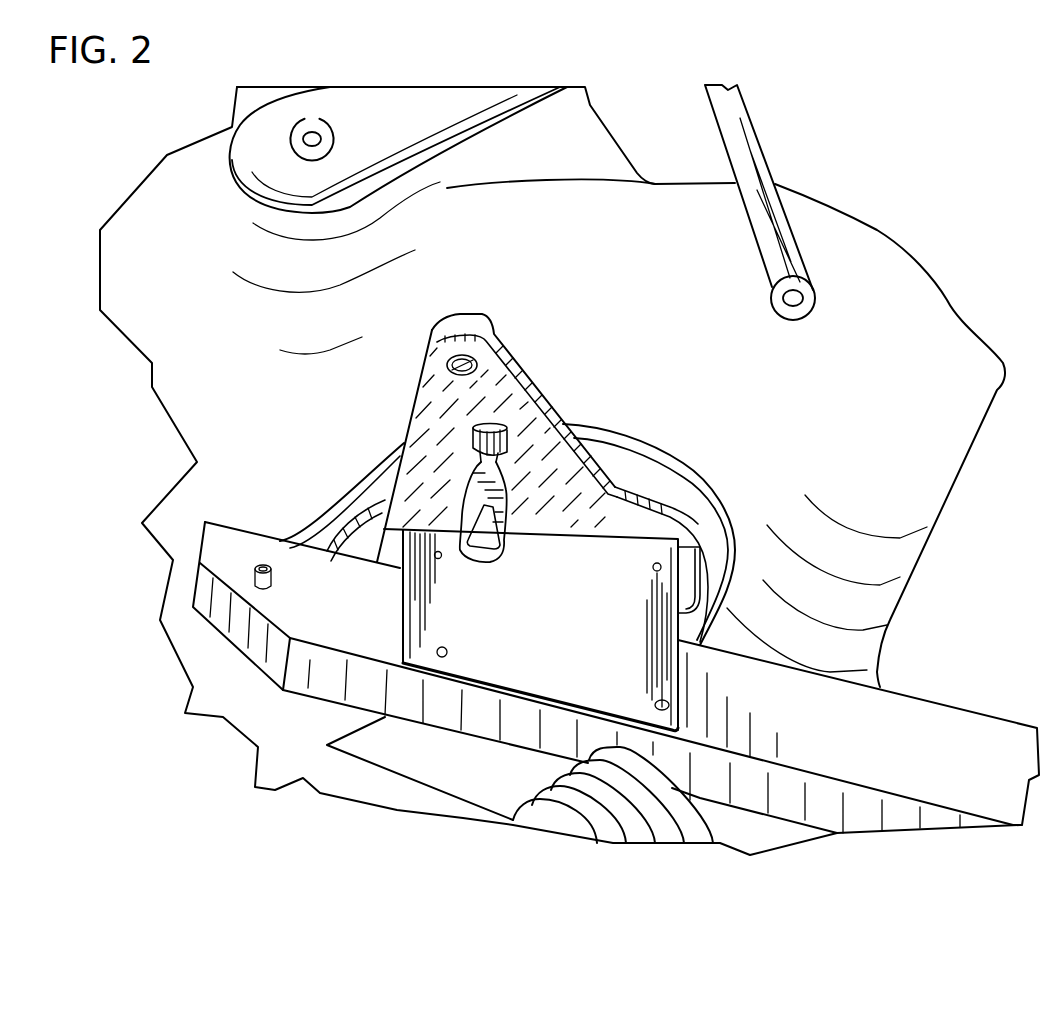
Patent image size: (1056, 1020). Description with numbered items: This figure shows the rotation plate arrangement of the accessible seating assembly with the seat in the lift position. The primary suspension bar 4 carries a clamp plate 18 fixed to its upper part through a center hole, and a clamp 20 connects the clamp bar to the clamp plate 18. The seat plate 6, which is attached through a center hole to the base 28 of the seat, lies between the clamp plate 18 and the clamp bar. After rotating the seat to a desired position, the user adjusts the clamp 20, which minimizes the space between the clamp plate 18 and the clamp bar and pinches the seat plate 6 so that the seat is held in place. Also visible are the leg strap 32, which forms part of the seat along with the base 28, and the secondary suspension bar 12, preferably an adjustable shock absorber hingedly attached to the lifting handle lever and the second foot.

The primary suspension bar 4 is at (928, 747).
The seat plate 6 is at (700, 487).
The secondary suspension bar 12 is at (543, 823).
The clamp plate 18 is at (624, 505).
The clamp 20 is at (472, 436).
The base 28 is at (903, 292).
The leg strap 32 is at (260, 138).